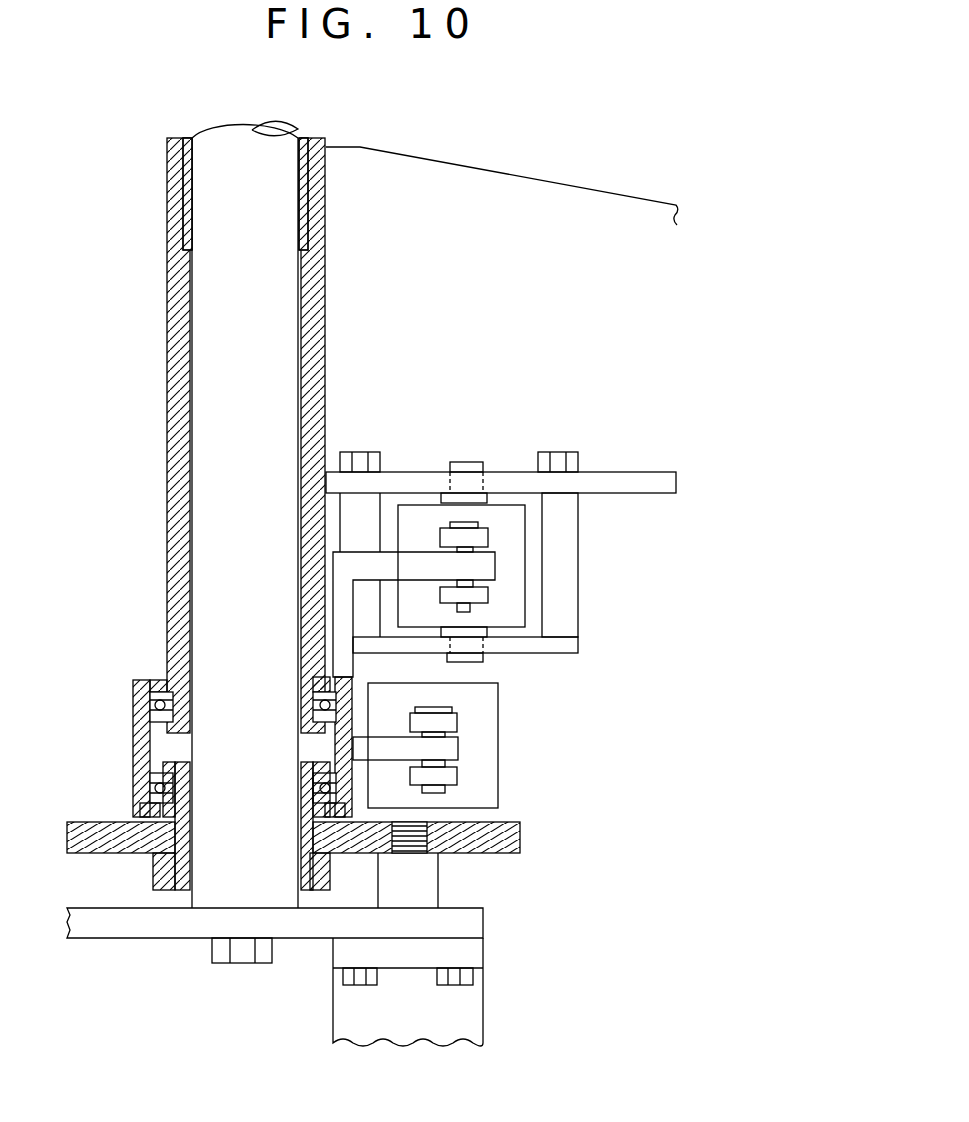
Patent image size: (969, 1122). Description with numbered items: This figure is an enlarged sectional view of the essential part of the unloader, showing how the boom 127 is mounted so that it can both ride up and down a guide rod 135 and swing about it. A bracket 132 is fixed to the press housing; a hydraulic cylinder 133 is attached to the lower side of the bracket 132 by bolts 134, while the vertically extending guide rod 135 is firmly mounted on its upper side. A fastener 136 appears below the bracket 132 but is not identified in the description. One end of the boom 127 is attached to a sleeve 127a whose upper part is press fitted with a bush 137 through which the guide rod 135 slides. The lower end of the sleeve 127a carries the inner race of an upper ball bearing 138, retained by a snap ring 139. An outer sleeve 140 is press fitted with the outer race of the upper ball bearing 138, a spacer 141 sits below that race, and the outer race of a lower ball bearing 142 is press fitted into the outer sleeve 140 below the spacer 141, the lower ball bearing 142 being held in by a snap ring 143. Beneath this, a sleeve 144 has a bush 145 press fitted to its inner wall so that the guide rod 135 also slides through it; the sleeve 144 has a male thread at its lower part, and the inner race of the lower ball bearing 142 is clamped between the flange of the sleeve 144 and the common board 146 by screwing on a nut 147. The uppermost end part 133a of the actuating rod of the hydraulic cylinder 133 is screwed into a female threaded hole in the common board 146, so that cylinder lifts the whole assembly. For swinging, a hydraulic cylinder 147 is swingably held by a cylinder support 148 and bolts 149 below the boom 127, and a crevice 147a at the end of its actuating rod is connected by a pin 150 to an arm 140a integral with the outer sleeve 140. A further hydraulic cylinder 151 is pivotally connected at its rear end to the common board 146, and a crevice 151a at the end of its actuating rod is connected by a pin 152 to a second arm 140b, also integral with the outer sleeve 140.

The boom 127 is at (552, 182).
The sleeve 127a is at (330, 418).
The bracket 132 is at (483, 927).
The hydraulic cylinder 133 is at (483, 1025).
The uppermost end part of actuating rod 133a is at (438, 882).
The bolts 134 is at (473, 975).
The guide rod 135 is at (210, 337).
The nut 136 is at (232, 963).
The bush 137 is at (182, 220).
The upper ball bearing 138 is at (150, 682).
The snap ring 139 is at (133, 728).
The outer sleeve 140 is at (133, 693).
The arm 140a is at (490, 568).
The arm 140b is at (458, 750).
The spacer 141 is at (133, 742).
The lower ball bearing 142 is at (133, 783).
The snap ring 143 is at (140, 807).
The sleeve 144 is at (310, 890).
The bush 145 is at (300, 890).
The common board 146 is at (520, 842).
The nut 147 is at (508, 518).
The crevice 147a is at (488, 596).
The cylinder support 148 is at (580, 643).
The bolts 149 is at (578, 458).
The pin 150 is at (463, 612).
The hydraulic cylinder 151 is at (497, 789).
The crevice 151a is at (457, 723).
The pin 152 is at (445, 790).